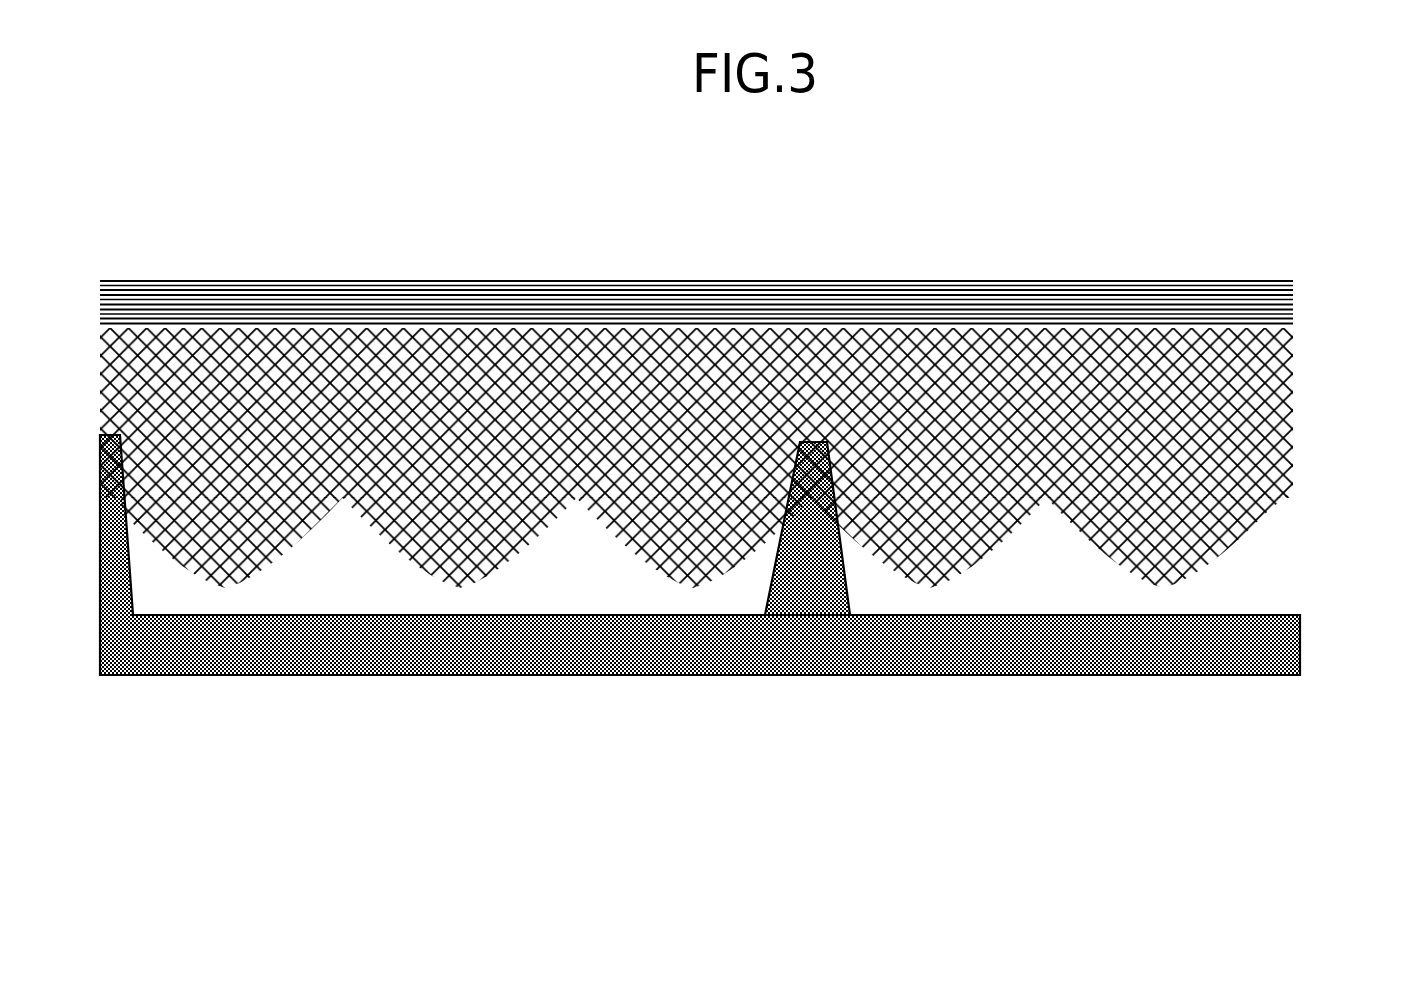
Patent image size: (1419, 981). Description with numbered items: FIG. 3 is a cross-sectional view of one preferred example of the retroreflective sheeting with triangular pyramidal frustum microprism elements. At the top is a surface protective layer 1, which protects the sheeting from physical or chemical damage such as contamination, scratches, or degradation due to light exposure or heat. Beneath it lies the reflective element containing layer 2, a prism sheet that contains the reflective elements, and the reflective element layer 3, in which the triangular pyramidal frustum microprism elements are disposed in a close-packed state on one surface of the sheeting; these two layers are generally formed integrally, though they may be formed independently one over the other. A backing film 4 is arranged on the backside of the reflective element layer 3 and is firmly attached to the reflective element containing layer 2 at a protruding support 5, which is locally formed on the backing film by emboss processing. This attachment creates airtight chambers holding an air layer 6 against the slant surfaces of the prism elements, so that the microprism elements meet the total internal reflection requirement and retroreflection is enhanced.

The surface protective layer 1 is at (752, 298).
The reflective element containing layer 2 is at (752, 413).
The reflective element layer 3 is at (762, 536).
The backing film 4 is at (752, 555).
The protruding support 5 is at (935, 419).
The air layer 6 is at (716, 419).